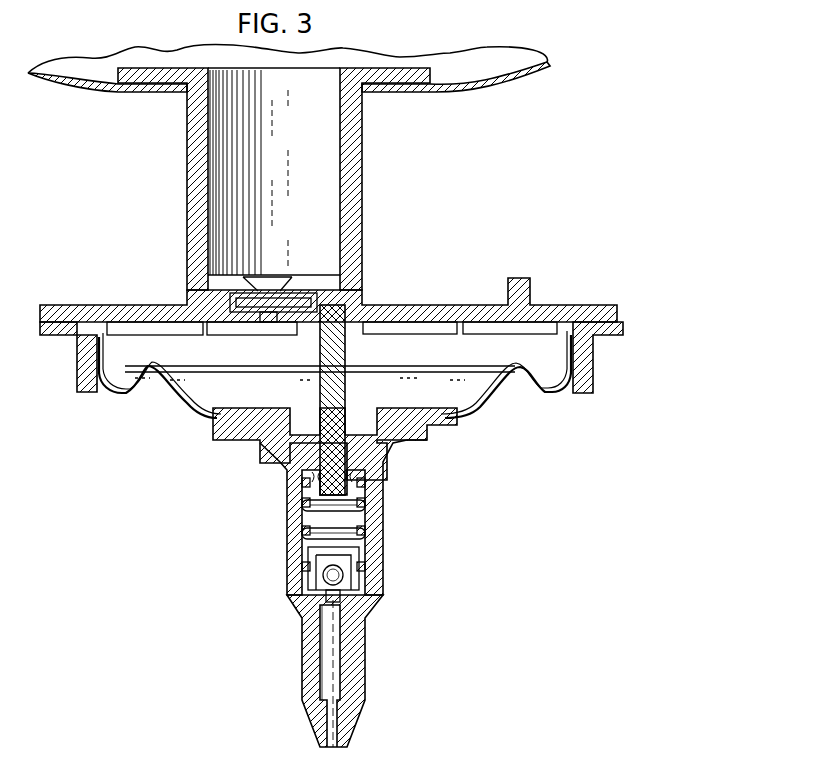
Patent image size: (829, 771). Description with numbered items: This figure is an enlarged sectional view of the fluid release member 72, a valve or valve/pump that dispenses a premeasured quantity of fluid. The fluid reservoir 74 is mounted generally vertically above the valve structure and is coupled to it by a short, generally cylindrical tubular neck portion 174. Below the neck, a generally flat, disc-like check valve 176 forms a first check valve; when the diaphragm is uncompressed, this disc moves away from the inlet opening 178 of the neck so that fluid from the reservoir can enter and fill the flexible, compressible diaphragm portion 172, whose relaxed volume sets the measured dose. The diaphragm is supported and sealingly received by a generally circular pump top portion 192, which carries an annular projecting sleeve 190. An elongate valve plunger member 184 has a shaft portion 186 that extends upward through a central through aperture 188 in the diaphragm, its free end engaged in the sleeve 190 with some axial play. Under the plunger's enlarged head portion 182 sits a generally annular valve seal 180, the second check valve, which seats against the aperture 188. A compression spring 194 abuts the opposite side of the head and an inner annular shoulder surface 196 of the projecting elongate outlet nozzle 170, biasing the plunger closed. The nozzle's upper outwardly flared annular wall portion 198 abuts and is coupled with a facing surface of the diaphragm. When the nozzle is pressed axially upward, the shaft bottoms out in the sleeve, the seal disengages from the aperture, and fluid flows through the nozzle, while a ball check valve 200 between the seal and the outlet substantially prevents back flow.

The fluid release member 72 is at (108, 461).
The fluid reservoir 74 is at (508, 62).
The outlet nozzle 170 is at (365, 645).
The diaphragm portion 172 is at (497, 404).
The tubular neck portion 174 is at (362, 122).
The check valve disc 176 is at (247, 288).
The inlet opening 178 is at (288, 292).
The valve seal 180 is at (393, 455).
The enlarged head portion 182 is at (300, 470).
The valve plunger member 184 is at (300, 505).
The shaft portion 186 is at (346, 380).
The central through aperture 188 is at (322, 402).
The annular projecting sleeve 190 is at (353, 345).
The pump top portion 192 is at (420, 304).
The compression spring 194 is at (365, 536).
The inner annular shoulder surface 196 is at (365, 582).
The outwardly flared annular wall portion 198 is at (437, 433).
The ball check valve 200 is at (323, 580).